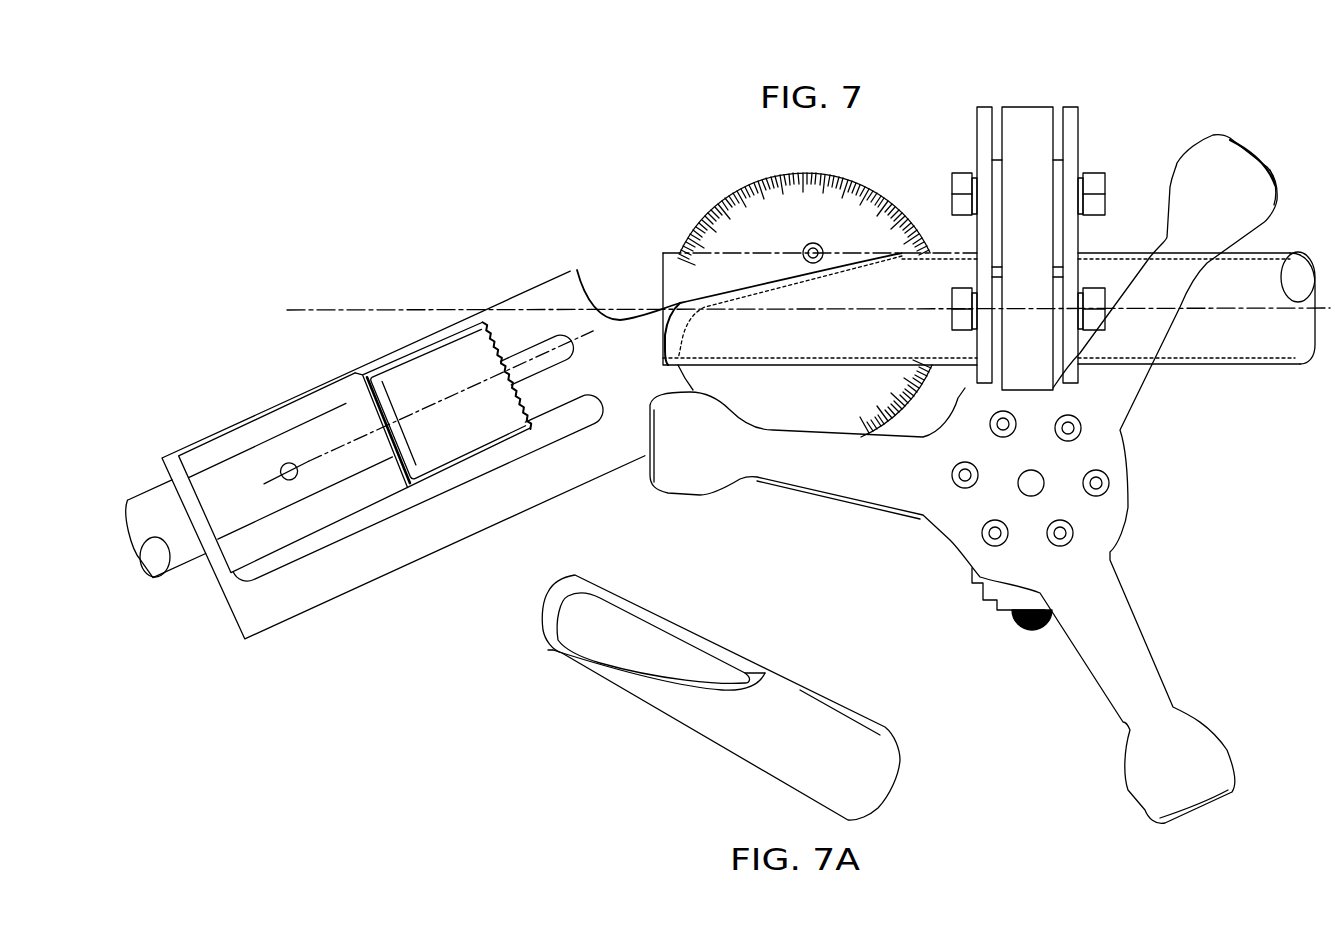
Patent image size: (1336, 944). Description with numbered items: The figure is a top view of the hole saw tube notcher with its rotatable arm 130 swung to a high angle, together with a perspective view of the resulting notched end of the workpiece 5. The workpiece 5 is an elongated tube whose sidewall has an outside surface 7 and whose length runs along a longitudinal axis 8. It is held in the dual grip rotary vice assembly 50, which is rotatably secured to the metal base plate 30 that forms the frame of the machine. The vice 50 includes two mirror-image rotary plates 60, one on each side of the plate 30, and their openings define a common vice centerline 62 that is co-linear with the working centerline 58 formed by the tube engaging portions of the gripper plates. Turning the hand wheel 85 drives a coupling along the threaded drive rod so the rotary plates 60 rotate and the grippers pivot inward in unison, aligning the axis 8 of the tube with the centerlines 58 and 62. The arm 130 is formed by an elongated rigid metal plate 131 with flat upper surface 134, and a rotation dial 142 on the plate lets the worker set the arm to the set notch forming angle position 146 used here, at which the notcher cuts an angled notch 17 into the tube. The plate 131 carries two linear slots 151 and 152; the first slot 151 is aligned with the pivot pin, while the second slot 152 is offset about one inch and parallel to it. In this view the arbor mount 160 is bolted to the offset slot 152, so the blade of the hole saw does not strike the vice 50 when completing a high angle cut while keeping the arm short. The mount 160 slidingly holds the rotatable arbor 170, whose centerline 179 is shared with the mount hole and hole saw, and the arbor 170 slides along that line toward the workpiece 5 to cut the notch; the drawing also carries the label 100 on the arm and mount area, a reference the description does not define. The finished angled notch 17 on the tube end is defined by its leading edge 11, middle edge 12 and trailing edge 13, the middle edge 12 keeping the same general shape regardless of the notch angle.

In FIG. 7A, the workpiece 5 is at (846, 684).
In FIG. 7A, the outside surface 7 is at (867, 740).
In FIG. 7, the longitudinal axis 8 is at (323, 188).
In FIG. 7, the leading edge 11 is at (675, 343).
In FIG. 7A, the leading edge 11 is at (550, 647).
In FIG. 7, the middle edge 12 is at (812, 277).
In FIG. 7A, the middle edge 12 is at (675, 613).
In FIG. 7, the trailing edge 13 is at (897, 257).
In FIG. 7A, the trailing edge 13 is at (767, 670).
In FIG. 7A, the angled notch 17 is at (713, 635).
In FIG. 7, the base plate 30 is at (1032, 108).
In FIG. 7, the dual grip rotary vice assembly 50 is at (1082, 119).
In FIG. 7, the working centerline 58 is at (316, 213).
In FIG. 7, the rotary plate 60 is at (983, 107).
In FIG. 7, the vice centerline 62 is at (328, 310).
In FIG. 7, the hand wheel 85 is at (1133, 600).
In FIG. 7, the knife holder 100 is at (495, 529).
In FIG. 7, the rotatable arm 130 is at (378, 578).
In FIG. 7, the rigid metal plate 131 is at (407, 547).
In FIG. 7, the upper surface 134 is at (472, 527).
In FIG. 7, the rotation dial 142 is at (740, 203).
In FIG. 7, the set notch forming angle position 146 is at (340, 626).
In FIG. 7, the first slot 151 is at (570, 423).
In FIG. 7, the second slot 152 is at (567, 358).
In FIG. 7, the arbor mount 160 is at (253, 433).
In FIG. 7, the rotatable arbor 170 is at (188, 558).
In FIG. 7, the centerline 179 is at (323, 452).